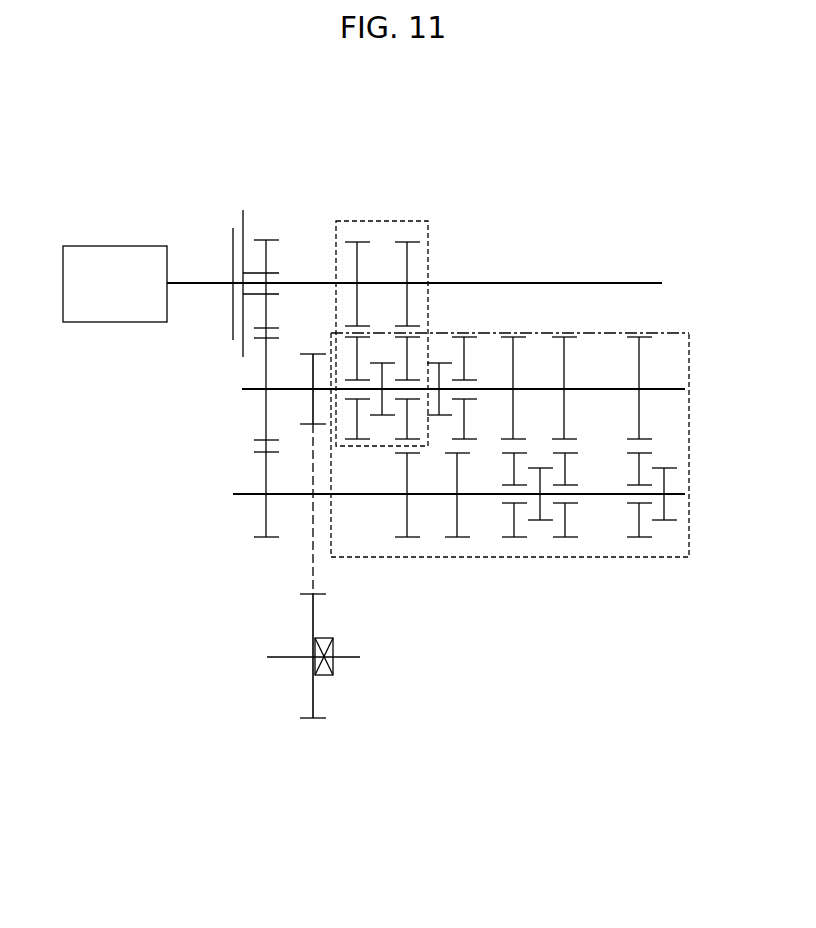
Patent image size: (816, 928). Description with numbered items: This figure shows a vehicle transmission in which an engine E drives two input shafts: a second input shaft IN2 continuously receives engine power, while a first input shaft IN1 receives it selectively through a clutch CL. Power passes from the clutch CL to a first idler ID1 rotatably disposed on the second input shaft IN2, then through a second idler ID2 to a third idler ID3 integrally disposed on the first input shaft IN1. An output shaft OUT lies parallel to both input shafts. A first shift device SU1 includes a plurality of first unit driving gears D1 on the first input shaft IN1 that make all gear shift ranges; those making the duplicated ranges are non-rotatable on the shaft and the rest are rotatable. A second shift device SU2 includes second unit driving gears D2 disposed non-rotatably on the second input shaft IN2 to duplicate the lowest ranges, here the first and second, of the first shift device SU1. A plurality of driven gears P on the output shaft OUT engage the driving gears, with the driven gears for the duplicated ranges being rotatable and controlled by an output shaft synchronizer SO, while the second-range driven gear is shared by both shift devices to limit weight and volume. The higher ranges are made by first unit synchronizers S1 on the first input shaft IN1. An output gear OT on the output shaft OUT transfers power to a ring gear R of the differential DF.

The engine E is at (117, 246).
The clutch CL is at (239, 212).
The first idler ID1 is at (267, 240).
The second idler ID2 is at (263, 441).
The third idler ID3 is at (266, 537).
The output gear OT is at (313, 355).
The output shaft OUT is at (683, 389).
The first input shaft IN1 is at (683, 494).
The second input shaft IN2 is at (624, 283).
The ring gear R is at (312, 723).
The differential DF is at (290, 679).
The second shift device SU2 is at (352, 221).
The first shift device SU1 is at (607, 557).
The second unit driving gears D2 is at (357, 242).
The first unit driving gears D1 is at (407, 540).
The driven gears P is at (650, 338).
The output shaft synchronizer SO is at (439, 415).
The first unit synchronizers S1 is at (664, 468).